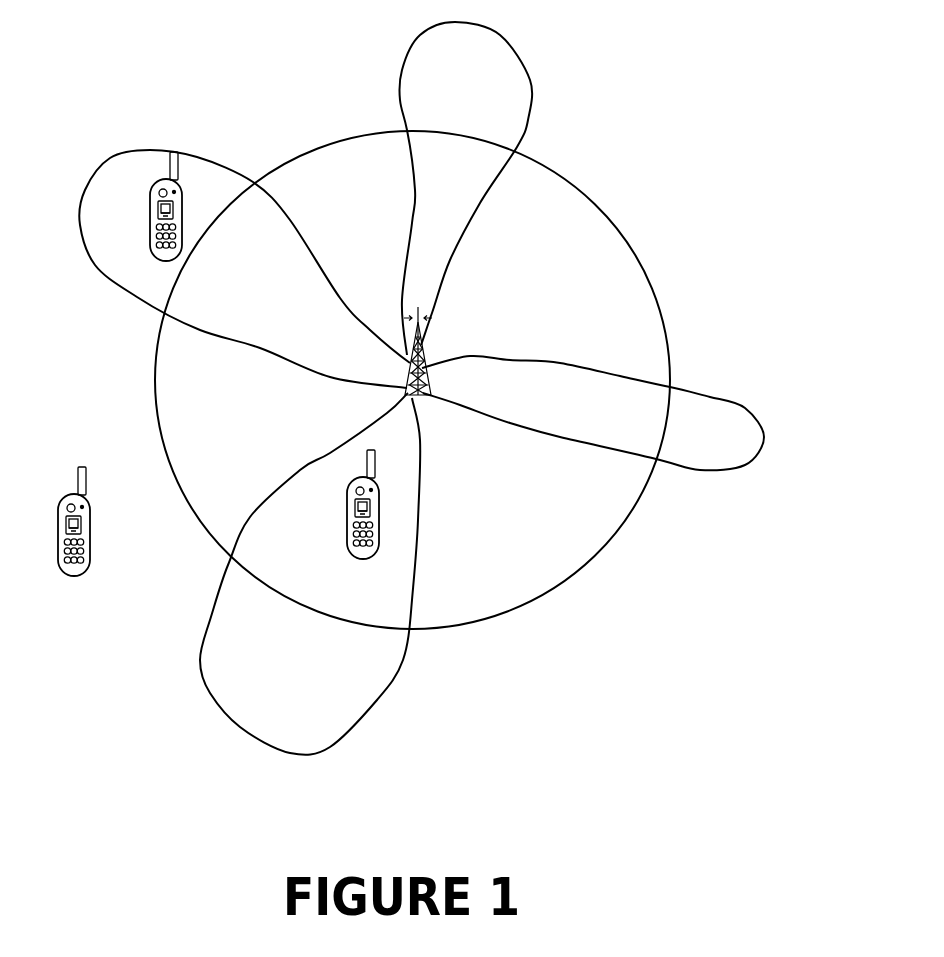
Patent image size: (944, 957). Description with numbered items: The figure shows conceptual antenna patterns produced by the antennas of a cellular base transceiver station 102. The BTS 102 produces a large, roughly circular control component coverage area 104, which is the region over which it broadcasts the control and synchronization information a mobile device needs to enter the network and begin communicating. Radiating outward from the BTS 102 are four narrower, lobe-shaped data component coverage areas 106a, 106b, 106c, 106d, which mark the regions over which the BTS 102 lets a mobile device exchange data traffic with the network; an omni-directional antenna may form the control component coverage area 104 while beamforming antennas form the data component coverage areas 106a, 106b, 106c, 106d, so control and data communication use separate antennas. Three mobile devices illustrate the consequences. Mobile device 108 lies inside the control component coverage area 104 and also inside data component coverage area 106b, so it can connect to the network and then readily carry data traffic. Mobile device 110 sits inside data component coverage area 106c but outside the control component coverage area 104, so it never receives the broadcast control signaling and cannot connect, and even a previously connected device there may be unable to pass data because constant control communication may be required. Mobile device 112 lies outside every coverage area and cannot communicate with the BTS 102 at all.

The base transceiver station 102 is at (422, 392).
The control component coverage area 104 is at (612, 213).
The data component coverage area 106a is at (678, 462).
The data component coverage area 106b is at (378, 700).
The data component coverage area 106c is at (133, 298).
The data component coverage area 106d is at (405, 70).
The mobile device 108 is at (347, 544).
The mobile device 110 is at (150, 205).
The mobile device 112 is at (58, 562).